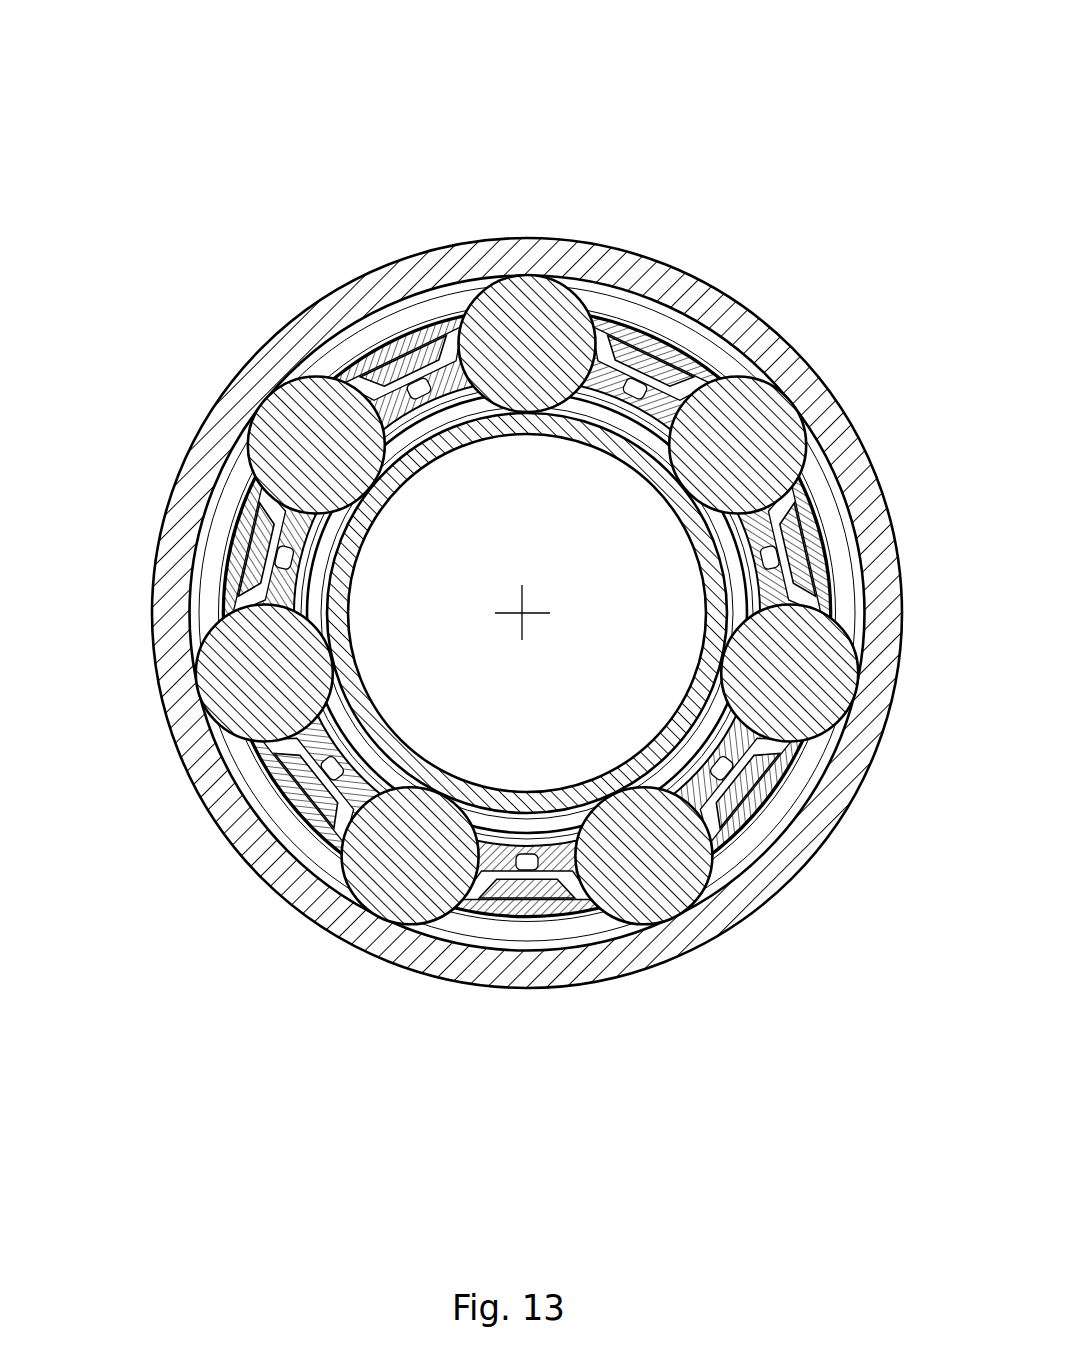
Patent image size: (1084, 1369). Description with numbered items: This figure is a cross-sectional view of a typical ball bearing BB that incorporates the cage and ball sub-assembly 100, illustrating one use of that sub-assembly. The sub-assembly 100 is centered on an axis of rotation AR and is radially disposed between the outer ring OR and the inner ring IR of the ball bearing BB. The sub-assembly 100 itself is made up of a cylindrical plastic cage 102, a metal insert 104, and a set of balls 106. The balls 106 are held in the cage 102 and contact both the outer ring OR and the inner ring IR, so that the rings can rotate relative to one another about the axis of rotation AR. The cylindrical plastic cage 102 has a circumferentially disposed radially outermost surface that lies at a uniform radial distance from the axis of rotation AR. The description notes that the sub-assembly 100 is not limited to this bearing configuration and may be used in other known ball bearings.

The ball bearing BB is at (497, 495).
The outer ring OR is at (521, 238).
The inner ring IR is at (330, 598).
The axis of rotation AR is at (522, 613).
The cage and ball sub-assembly 100 is at (527, 543).
The cylindrical plastic cage 102 is at (606, 324).
The metal insert 104 is at (668, 345).
The balls 106 is at (302, 404).